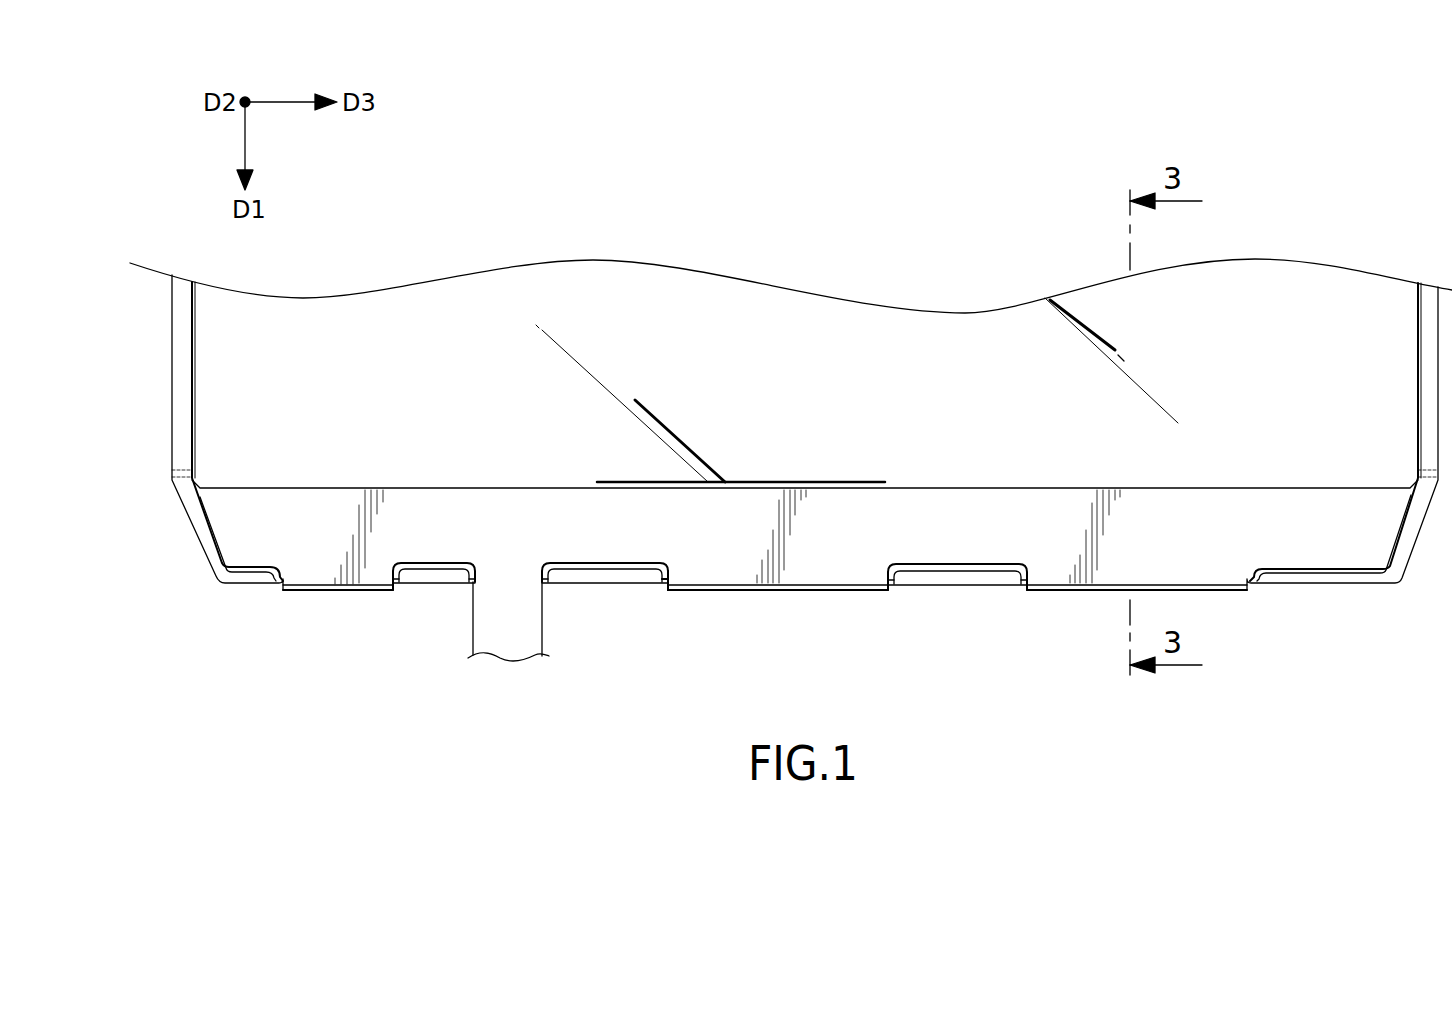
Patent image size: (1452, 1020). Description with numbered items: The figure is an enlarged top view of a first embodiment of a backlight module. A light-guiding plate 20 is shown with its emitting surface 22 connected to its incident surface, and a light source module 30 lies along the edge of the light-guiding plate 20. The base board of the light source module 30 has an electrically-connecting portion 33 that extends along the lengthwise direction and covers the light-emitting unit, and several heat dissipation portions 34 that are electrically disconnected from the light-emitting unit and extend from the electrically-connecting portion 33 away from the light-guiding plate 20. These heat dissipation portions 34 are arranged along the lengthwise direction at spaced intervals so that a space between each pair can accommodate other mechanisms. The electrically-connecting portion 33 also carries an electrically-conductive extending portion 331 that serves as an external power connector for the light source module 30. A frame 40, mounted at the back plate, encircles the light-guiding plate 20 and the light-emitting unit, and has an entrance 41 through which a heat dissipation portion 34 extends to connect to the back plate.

The light-guiding plate 20 is at (513, 280).
The emitting surface 22 is at (750, 355).
The light source module 30 is at (243, 481).
The electrically-connecting portion 33 is at (507, 512).
The electrically-conductive extending portion 331 is at (527, 621).
The heat dissipation portion 34 is at (338, 600).
The frame 40 is at (200, 534).
The entrance 41 is at (668, 575).